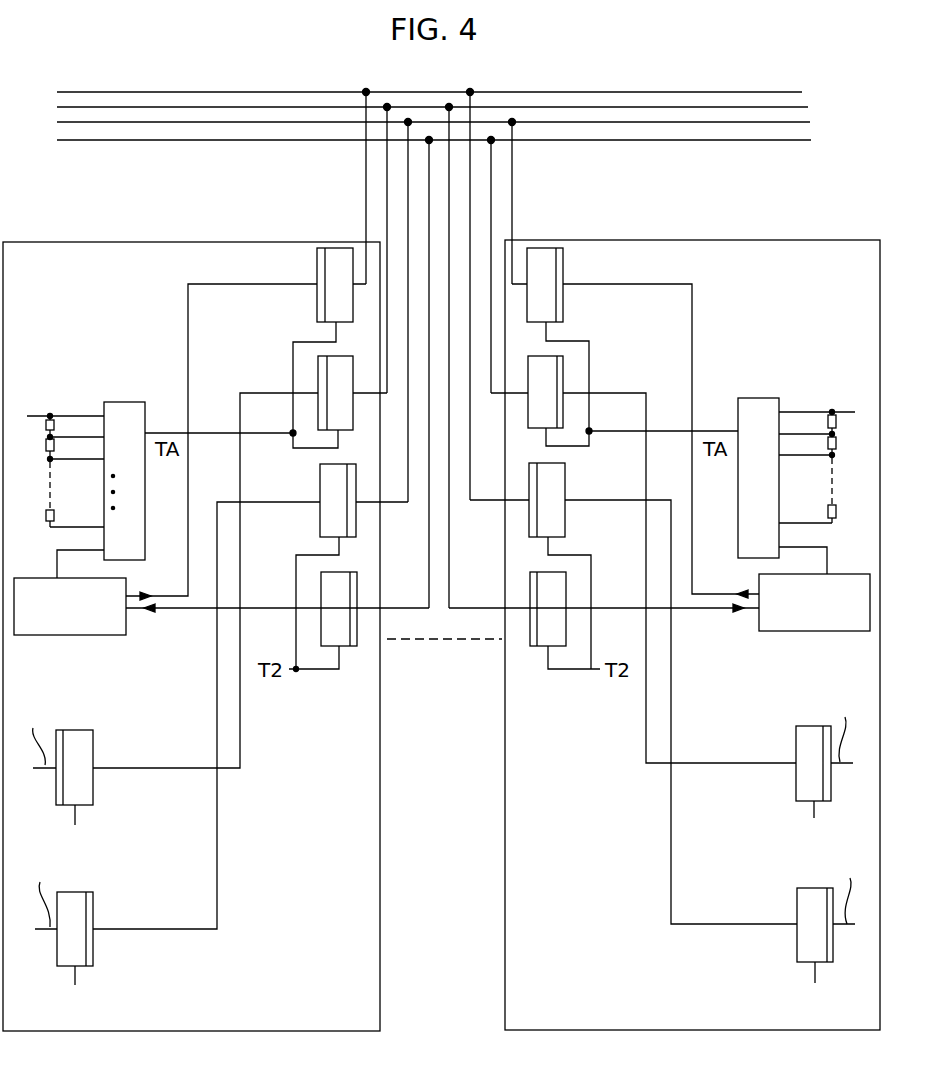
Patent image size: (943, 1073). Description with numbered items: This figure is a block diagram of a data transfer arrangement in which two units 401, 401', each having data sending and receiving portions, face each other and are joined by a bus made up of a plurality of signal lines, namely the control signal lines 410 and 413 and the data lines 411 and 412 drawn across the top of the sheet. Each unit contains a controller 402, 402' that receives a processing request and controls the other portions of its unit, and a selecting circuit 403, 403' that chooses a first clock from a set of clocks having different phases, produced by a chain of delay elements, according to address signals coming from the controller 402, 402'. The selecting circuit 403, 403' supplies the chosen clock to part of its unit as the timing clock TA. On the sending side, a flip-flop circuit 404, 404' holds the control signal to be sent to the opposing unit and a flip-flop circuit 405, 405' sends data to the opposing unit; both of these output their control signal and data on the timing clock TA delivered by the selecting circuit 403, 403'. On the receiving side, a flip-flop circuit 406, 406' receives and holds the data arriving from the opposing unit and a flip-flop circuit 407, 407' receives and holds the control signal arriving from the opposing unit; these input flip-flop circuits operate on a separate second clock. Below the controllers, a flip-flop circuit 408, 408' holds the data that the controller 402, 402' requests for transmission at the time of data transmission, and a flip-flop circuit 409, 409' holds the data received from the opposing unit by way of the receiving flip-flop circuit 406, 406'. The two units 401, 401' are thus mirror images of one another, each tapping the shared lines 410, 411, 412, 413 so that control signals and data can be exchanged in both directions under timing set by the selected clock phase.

The unit 401 is at (191, 618).
The unit 401' is at (692, 611).
The controller 402 is at (70, 637).
The controller 402' is at (807, 631).
The selecting circuit 403 is at (85, 457).
The selecting circuit 403' is at (796, 449).
The flip-flop circuit 404 is at (298, 285).
The flip-flop circuit 404' is at (591, 285).
The flip-flop circuit 405 is at (289, 379).
The flip-flop circuit 405' is at (593, 376).
The flip-flop circuit 406 is at (306, 500).
The flip-flop circuit 406' is at (576, 499).
The flip-flop circuit 407 is at (332, 659).
The flip-flop circuit 407' is at (549, 654).
The flip-flop circuit 408 is at (87, 765).
The flip-flop circuit 408' is at (789, 772).
The flip-flop circuit 409 is at (95, 934).
The flip-flop circuit 409' is at (790, 931).
The control signal line 410 is at (802, 92).
The data line 411 is at (808, 107).
The data line 412 is at (810, 122).
The control signal line 413 is at (811, 140).